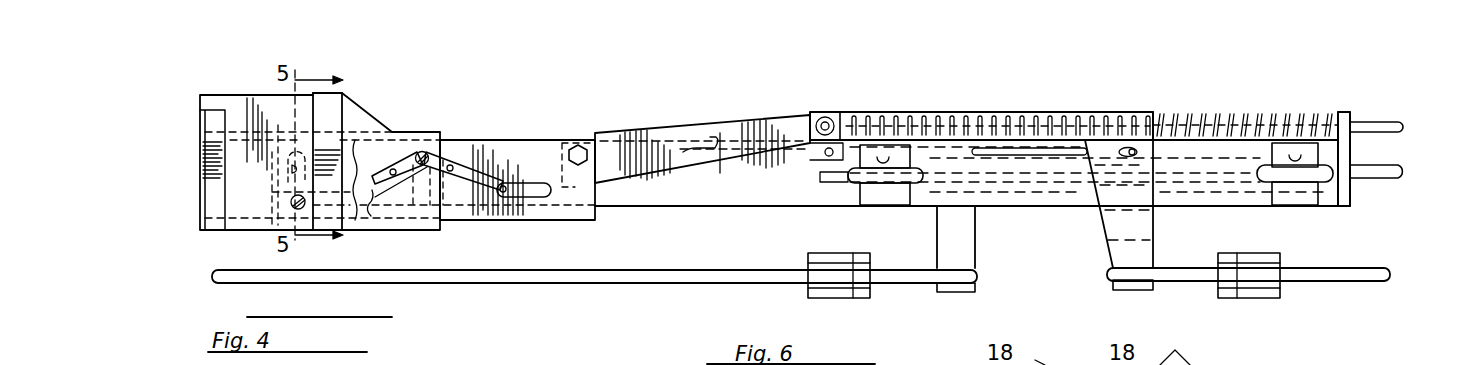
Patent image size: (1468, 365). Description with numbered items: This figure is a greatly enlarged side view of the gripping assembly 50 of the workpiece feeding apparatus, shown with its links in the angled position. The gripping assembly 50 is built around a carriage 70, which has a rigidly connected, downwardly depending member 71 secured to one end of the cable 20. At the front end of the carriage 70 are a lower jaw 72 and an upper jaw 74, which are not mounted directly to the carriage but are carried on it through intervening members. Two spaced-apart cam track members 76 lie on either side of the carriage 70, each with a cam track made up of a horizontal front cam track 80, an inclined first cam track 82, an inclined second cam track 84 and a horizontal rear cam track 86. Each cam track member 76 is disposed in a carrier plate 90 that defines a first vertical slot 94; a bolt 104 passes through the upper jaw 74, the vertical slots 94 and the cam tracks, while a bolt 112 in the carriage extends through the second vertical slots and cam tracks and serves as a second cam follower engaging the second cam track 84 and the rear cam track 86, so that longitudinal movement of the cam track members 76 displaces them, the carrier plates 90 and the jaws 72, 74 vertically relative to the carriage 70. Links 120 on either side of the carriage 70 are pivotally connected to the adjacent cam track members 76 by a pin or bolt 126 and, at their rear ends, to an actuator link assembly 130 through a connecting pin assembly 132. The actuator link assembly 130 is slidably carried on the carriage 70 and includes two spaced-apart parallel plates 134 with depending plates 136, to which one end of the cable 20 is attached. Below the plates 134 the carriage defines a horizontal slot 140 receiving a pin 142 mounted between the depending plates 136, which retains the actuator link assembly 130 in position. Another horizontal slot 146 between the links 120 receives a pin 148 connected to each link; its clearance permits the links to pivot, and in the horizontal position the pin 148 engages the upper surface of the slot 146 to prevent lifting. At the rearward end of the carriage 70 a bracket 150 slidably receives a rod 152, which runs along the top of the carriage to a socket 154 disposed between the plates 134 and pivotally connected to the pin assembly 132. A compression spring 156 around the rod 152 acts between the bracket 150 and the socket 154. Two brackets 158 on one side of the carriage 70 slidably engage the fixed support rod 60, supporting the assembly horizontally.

The cable 20 is at (708, 271).
The gripping assembly 50 is at (809, 106).
The support rod 60 is at (914, 176).
The carriage 70 is at (633, 198).
The downwardly depending member 71 is at (978, 249).
The lower jaw 72 is at (207, 115).
The upper jaw 74 is at (222, 104).
The cam track member 76 is at (567, 230).
The horizontal front cam track 80 is at (375, 222).
The inclined first cam track 82 is at (392, 175).
The inclined second cam track 84 is at (458, 170).
The horizontal rear cam track 86 is at (506, 184).
The carrier plate 90 is at (408, 238).
The first vertical slot 94 is at (292, 179).
The bolt 104 is at (292, 202).
The bolt 112 is at (423, 151).
The link 120 is at (622, 138).
The pin or bolt 126 is at (578, 144).
The actuator link assembly 130 is at (1070, 108).
The connecting pin assembly 132 is at (831, 114).
The parallel plates 134 is at (1155, 112).
The depending plates 136 is at (1135, 234).
The horizontal slot 140 is at (1059, 156).
The pin 142 is at (1140, 151).
The horizontal slot 146 is at (720, 175).
The pin 148 is at (826, 156).
The bracket 150 is at (1345, 144).
The rod 152 is at (1359, 126).
The socket 154 is at (850, 117).
The compression spring 156 is at (1230, 113).
The bracket 158 is at (879, 195).